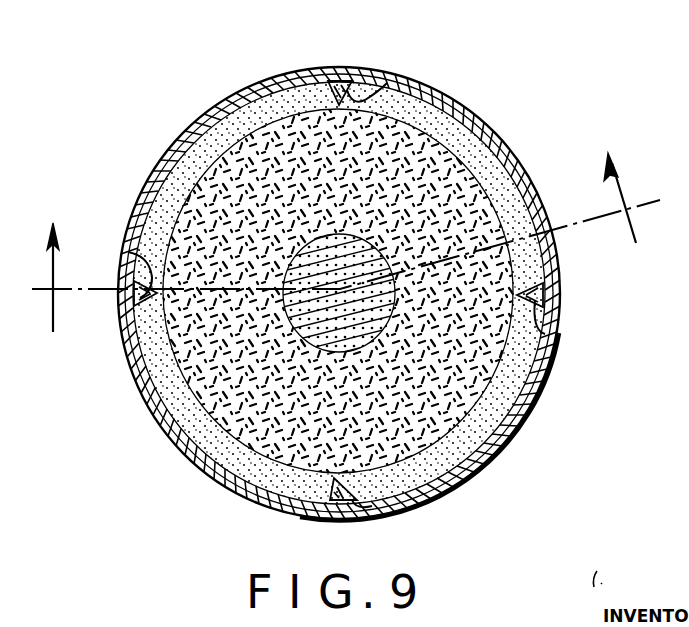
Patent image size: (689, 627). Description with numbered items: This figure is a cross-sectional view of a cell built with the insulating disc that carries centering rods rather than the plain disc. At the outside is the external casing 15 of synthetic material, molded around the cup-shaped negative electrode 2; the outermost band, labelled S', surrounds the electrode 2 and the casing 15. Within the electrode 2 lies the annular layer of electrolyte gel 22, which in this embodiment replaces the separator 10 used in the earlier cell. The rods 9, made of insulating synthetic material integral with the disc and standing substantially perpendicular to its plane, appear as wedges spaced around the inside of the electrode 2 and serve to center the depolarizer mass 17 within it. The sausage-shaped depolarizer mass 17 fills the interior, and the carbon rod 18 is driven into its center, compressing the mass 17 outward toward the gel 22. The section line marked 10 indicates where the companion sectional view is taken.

The negative electrode 2 is at (190, 138).
The outer hatched band S' is at (349, 293).
The rods 9 is at (387, 83).
The separator 10 is at (346, 226).
The external casing 15 is at (128, 347).
The depolarizer mass 17 is at (220, 387).
The carbon rod 18 is at (357, 263).
The electrolyte gel 22 is at (493, 410).